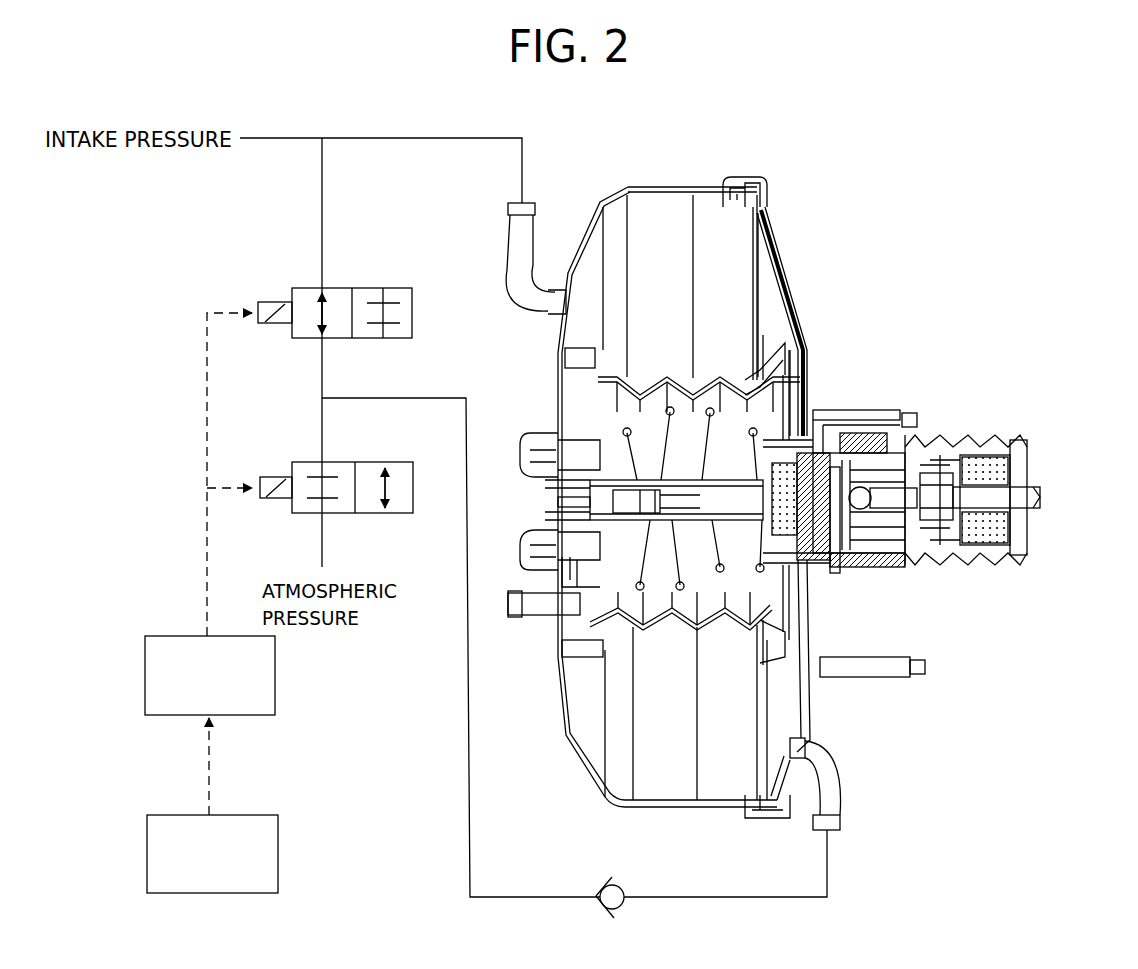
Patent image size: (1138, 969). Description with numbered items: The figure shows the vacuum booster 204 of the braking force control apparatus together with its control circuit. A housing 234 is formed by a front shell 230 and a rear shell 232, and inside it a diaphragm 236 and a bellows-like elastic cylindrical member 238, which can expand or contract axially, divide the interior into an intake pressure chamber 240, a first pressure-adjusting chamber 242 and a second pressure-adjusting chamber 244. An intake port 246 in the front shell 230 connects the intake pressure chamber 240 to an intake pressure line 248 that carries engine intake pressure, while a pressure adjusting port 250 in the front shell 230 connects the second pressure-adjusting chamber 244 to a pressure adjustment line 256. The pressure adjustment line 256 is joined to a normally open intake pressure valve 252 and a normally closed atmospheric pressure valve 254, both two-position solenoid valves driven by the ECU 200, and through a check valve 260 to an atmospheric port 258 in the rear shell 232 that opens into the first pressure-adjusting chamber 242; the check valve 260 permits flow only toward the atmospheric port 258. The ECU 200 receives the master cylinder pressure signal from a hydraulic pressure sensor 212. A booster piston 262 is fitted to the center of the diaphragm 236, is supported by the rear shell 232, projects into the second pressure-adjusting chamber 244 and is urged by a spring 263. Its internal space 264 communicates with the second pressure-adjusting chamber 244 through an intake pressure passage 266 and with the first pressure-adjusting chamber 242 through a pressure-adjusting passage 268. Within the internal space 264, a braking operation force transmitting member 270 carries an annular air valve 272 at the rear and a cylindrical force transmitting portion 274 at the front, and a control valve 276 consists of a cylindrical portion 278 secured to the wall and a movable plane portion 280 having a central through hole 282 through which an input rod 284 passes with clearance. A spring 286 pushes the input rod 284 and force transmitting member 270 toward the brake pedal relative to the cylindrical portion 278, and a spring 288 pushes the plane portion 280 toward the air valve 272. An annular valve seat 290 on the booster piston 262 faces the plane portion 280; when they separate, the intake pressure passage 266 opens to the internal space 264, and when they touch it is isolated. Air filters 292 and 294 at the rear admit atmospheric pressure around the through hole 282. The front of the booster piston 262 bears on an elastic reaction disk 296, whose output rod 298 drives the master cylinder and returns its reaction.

The ECU 200 is at (278, 685).
The vacuum booster 204 is at (799, 464).
The hydraulic pressure sensor 212 is at (280, 855).
The front shell 230 is at (697, 197).
The rear shell 232 is at (768, 228).
The housing 234 is at (922, 165).
The diaphragm 236 is at (782, 289).
The cylindrical member 238 is at (655, 630).
The intake pressure chamber 240 is at (613, 206).
The first pressure-adjusting chamber 242 is at (802, 352).
The second pressure-adjusting chamber 244 is at (651, 378).
The intake port 246 is at (508, 232).
The intake pressure line 248 is at (282, 139).
The pressure adjusting port 250 is at (538, 618).
The intake pressure valve 252 is at (413, 313).
The atmospheric pressure valve 254 is at (397, 514).
The pressure adjustment line 256 is at (415, 398).
The atmospheric port 258 is at (840, 788).
The check valve 260 is at (630, 885).
The booster piston 262 is at (827, 417).
The spring 263 is at (563, 577).
The internal space 264 is at (903, 553).
The intake pressure passage 266 is at (743, 397).
The pressure-adjusting passage 268 is at (845, 567).
The braking operation force transmitting member 270 is at (835, 555).
The air valve 272 is at (937, 553).
The force transmitting portion 274 is at (767, 480).
The control valve 276 is at (960, 443).
The cylindrical portion 278 is at (933, 440).
The plane portion 280 is at (897, 423).
The through hole 282 is at (945, 560).
The input rod 284 is at (1043, 495).
The spring 286 is at (1013, 437).
The spring 288 is at (960, 555).
The valve seat 290 is at (877, 400).
The air filter 292 is at (990, 553).
The air filter 294 is at (1025, 527).
The reaction disk 296 is at (734, 617).
The output rod 298 is at (640, 482).